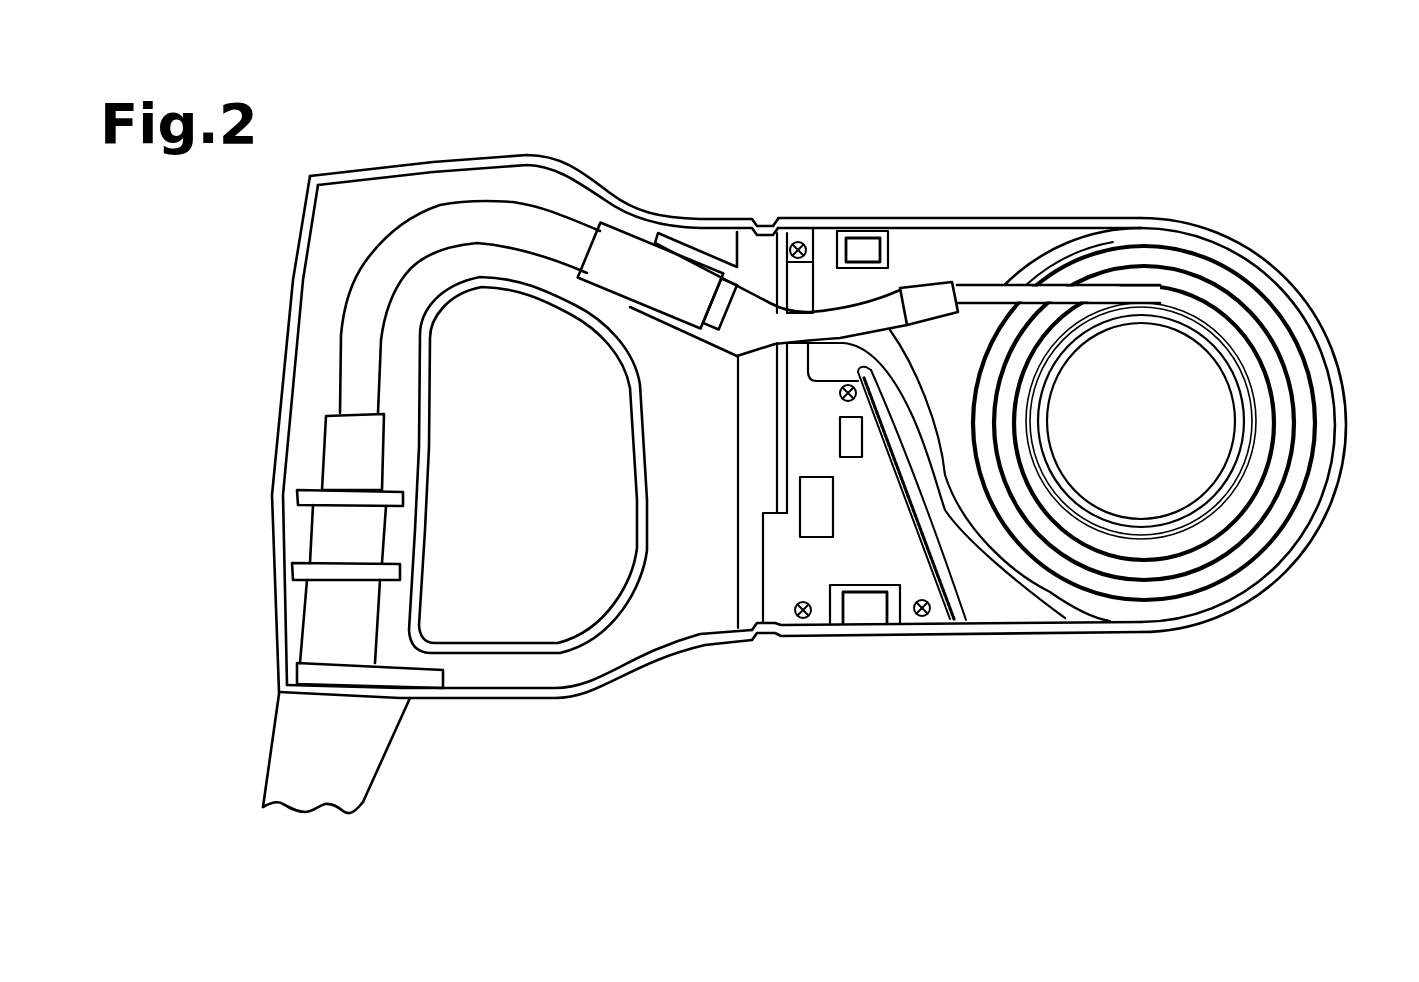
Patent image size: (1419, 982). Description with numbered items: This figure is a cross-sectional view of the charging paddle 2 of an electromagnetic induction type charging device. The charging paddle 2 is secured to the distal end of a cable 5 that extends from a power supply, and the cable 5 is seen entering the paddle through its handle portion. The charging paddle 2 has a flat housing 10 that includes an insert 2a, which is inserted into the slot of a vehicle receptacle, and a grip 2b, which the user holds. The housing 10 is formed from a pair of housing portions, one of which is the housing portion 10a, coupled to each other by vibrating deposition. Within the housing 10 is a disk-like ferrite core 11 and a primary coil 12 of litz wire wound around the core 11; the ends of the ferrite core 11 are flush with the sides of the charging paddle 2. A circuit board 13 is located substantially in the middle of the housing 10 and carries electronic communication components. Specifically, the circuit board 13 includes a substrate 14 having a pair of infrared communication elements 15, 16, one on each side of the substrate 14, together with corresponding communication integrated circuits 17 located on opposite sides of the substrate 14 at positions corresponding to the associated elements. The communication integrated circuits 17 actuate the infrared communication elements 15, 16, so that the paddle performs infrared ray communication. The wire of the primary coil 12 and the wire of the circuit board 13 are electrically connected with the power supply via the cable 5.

The charging paddle 2 is at (820, 215).
The insert 2a is at (962, 221).
The grip 2b is at (294, 257).
The cable 5 is at (268, 777).
The housing 10 is at (723, 642).
The housing portion 10a is at (595, 688).
The ferrite core 11 is at (1213, 387).
The primary coil 12 is at (1290, 497).
The circuit board 13 is at (808, 433).
The substrate 14 is at (775, 541).
The infrared communication element 15 is at (853, 457).
The infrared communication element 16 is at (906, 493).
The communication integrated circuit 17 is at (818, 537).